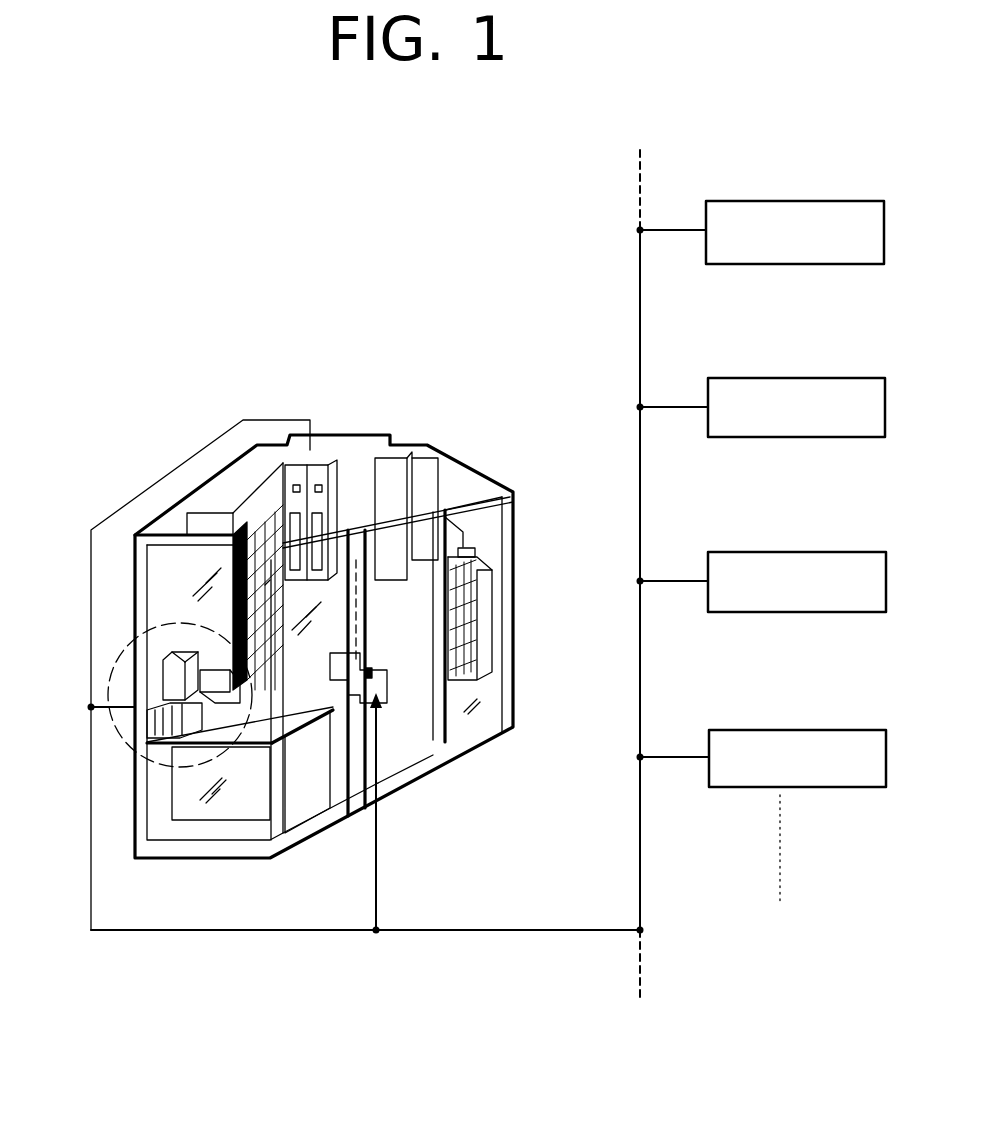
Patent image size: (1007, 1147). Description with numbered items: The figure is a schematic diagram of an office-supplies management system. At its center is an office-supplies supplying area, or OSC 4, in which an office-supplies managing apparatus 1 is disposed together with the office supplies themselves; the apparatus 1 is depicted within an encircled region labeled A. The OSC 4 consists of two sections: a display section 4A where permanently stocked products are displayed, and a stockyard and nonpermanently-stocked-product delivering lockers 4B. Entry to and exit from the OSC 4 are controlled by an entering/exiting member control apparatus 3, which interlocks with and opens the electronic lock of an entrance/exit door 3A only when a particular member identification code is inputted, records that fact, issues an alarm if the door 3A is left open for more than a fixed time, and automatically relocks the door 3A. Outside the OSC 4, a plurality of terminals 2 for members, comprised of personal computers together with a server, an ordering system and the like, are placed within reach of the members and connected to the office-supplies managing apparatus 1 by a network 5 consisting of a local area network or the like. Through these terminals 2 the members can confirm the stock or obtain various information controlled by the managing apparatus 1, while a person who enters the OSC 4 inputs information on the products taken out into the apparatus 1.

The office-supplies managing apparatus 1 is at (157, 690).
The terminals for members 2 is at (864, 201).
The entering/exiting member control apparatus 3 is at (390, 694).
The entrance/exit door 3A is at (398, 768).
The office-supplies supplying area (OSC) 4 is at (478, 458).
The display section 4A is at (480, 603).
The stockyard and nonpermanently-stocked-product delivering lockers 4B is at (308, 453).
The network 5 is at (525, 930).
The work area A is at (120, 740).